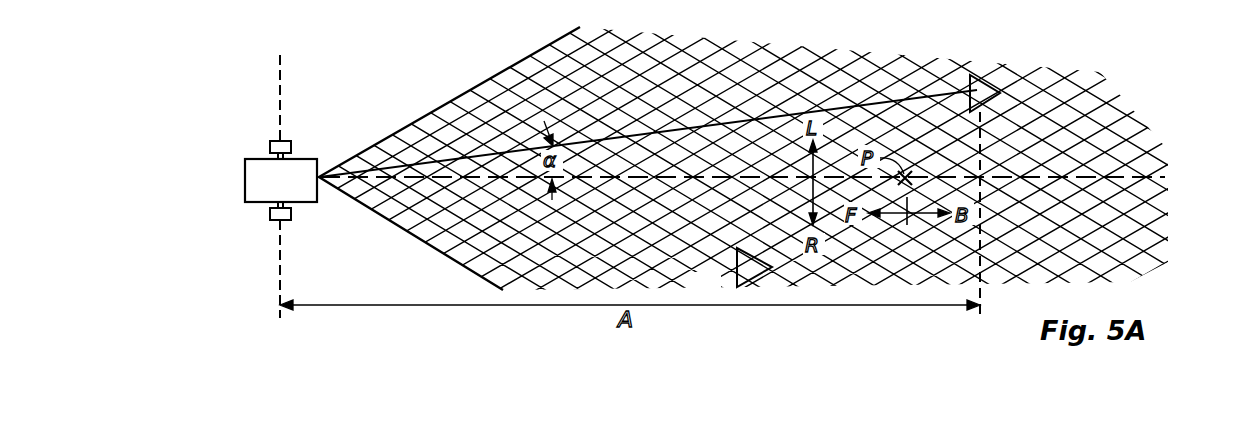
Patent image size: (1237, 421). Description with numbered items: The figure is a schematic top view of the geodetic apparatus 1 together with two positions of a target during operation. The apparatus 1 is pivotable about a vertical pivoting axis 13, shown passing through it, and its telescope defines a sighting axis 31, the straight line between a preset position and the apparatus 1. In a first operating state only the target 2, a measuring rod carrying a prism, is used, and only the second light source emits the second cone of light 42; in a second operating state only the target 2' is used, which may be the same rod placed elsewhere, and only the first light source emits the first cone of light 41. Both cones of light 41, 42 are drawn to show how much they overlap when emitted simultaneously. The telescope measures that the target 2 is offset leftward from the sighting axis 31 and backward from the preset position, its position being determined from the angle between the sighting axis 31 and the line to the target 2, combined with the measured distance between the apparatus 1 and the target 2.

The geodetic apparatus 1 is at (238, 155).
The target 2 is at (1000, 179).
The target 2' is at (734, 272).
The vertical pivoting axis 13 is at (278, 252).
The sighting axis 31 is at (1150, 177).
The first cone of light 41 is at (453, 99).
The second cone of light 42 is at (430, 113).